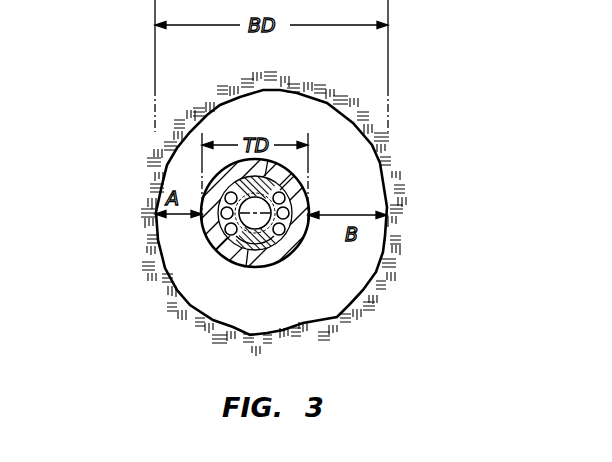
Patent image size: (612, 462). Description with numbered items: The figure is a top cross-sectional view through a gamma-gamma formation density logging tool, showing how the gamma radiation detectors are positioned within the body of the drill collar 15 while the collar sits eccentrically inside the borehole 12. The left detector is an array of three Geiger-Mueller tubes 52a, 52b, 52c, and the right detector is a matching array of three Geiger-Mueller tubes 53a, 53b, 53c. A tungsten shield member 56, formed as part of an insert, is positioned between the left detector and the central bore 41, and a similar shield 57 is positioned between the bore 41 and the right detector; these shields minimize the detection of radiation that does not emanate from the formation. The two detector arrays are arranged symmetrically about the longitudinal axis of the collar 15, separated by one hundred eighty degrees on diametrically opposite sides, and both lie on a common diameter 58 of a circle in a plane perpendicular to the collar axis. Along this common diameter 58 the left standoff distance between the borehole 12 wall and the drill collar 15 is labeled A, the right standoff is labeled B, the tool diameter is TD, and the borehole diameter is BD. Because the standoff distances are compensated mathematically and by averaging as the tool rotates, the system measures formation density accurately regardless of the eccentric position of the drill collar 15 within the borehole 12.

The borehole 12 is at (359, 154).
The drill collar 15 is at (236, 256).
The bore 41 is at (244, 252).
The tungsten shield member 56 is at (226, 252).
The shield 57 is at (296, 171).
The common diameter 58 is at (278, 257).
The Geiger-Mueller tube 52a is at (226, 190).
The Geiger-Mueller tube 52b is at (221, 214).
The Geiger-Mueller tube 52c is at (226, 236).
The Geiger-Mueller tube 53a is at (286, 195).
The Geiger-Mueller tube 53b is at (284, 239).
The Geiger-Mueller tube 53c is at (284, 245).